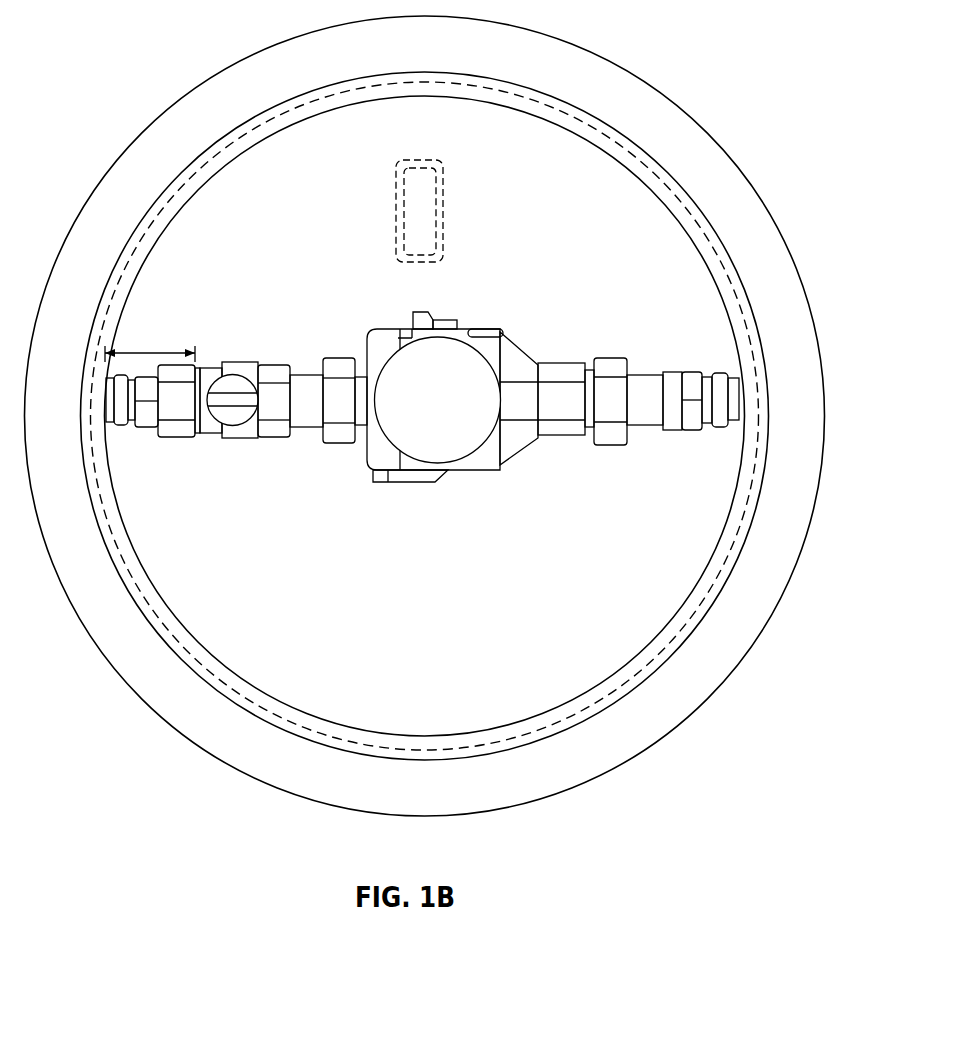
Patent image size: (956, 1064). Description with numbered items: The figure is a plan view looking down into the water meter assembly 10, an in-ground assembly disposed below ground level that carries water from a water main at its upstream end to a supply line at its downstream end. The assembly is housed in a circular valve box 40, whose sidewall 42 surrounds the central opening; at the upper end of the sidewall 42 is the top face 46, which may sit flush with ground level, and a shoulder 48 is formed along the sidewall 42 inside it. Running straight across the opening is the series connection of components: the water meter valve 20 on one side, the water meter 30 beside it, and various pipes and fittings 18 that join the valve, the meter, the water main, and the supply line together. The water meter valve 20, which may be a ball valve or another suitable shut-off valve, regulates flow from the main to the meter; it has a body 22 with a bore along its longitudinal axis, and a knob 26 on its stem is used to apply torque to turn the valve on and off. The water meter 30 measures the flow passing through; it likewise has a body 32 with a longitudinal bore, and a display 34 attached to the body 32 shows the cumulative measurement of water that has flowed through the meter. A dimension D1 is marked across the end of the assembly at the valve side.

The water meter assembly 10 is at (741, 48).
The valve box 40 is at (763, 171).
The sidewall 42 is at (804, 293).
The top face 46 is at (778, 263).
The shoulder 48 is at (764, 357).
The distance D1 is at (151, 352).
The water meter valve 20 is at (211, 446).
The body 22 is at (247, 438).
The knob 26 is at (248, 378).
The water meter 30 is at (418, 494).
The body 32 is at (483, 460).
The display 34 is at (470, 365).
The pipes and fittings 18 is at (608, 367).